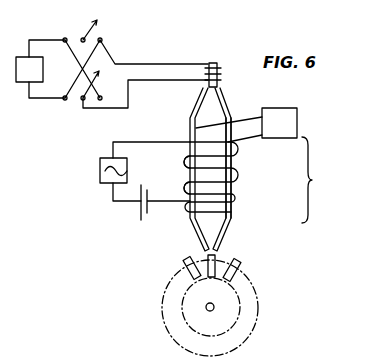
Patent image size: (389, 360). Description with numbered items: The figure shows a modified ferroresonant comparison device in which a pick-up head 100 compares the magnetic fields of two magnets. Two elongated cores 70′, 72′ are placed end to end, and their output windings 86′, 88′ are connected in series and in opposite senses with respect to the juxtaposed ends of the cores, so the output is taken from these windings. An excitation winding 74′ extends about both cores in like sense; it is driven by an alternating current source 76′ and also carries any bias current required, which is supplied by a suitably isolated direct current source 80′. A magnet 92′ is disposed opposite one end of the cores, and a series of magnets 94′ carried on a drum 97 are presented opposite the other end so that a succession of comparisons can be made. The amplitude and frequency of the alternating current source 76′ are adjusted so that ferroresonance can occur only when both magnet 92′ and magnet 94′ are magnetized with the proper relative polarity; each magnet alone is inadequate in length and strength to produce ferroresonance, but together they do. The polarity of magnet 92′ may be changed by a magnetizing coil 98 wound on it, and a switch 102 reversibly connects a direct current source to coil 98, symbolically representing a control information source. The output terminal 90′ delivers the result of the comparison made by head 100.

The switch 102 is at (74, 30).
The magnet 92′ is at (213, 62).
The magnetizing coil 98 is at (218, 72).
The core 70′ is at (200, 106).
The core 72′ is at (222, 96).
The output winding 88′ is at (243, 182).
The output 90′ is at (297, 114).
The excitation winding 74′ is at (240, 173).
The output winding 86′ is at (181, 173).
The alternating current source 76′ is at (100, 170).
The direct current source 80′ is at (143, 210).
The head 100 is at (312, 177).
The magnets 94′ is at (187, 264).
The drum 97 is at (260, 296).